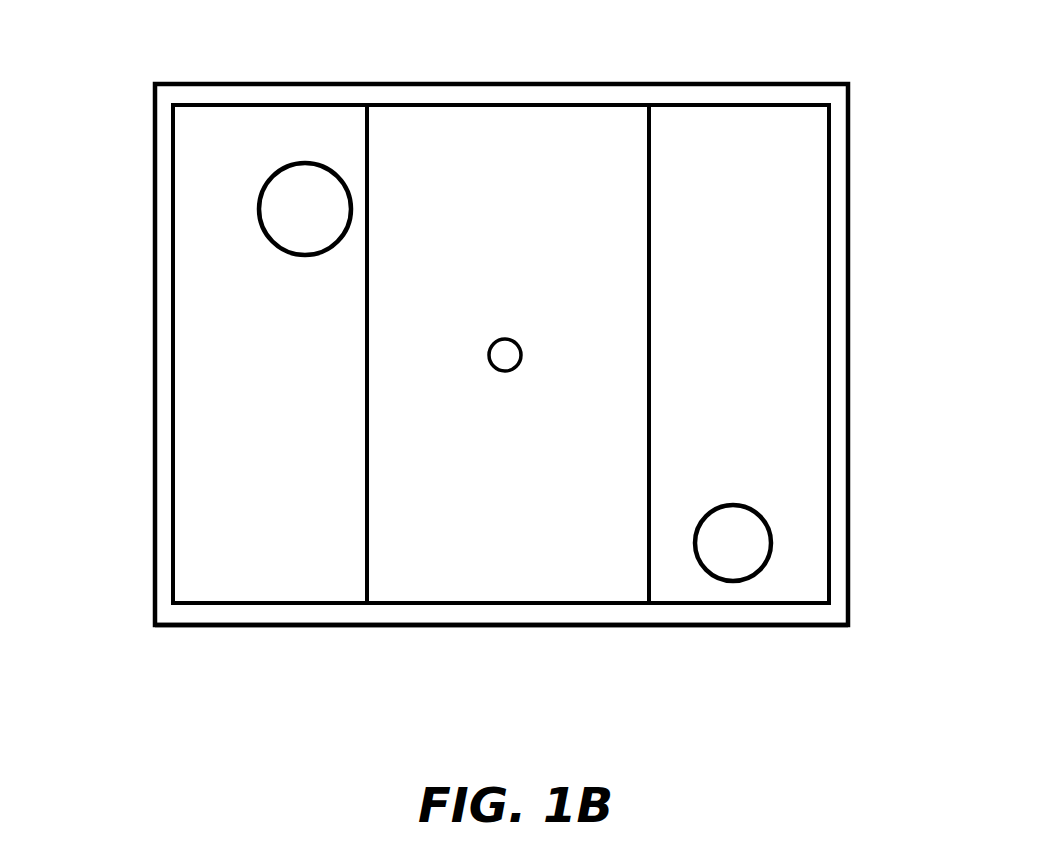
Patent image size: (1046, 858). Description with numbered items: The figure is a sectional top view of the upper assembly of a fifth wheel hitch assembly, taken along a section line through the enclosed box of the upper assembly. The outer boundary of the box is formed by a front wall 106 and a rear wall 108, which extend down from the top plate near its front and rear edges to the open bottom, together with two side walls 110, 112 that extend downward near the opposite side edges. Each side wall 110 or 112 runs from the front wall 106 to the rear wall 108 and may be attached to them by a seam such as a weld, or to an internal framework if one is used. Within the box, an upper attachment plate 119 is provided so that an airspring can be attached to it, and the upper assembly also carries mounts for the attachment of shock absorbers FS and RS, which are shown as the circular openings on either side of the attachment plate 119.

The front wall 106 is at (836, 226).
The rear wall 108 is at (164, 280).
The side wall 110 is at (500, 100).
The upper attachment plate 119 is at (565, 165).
The side wall 112 is at (513, 615).
The shock absorber FS is at (303, 163).
The shock absorber RS is at (734, 582).